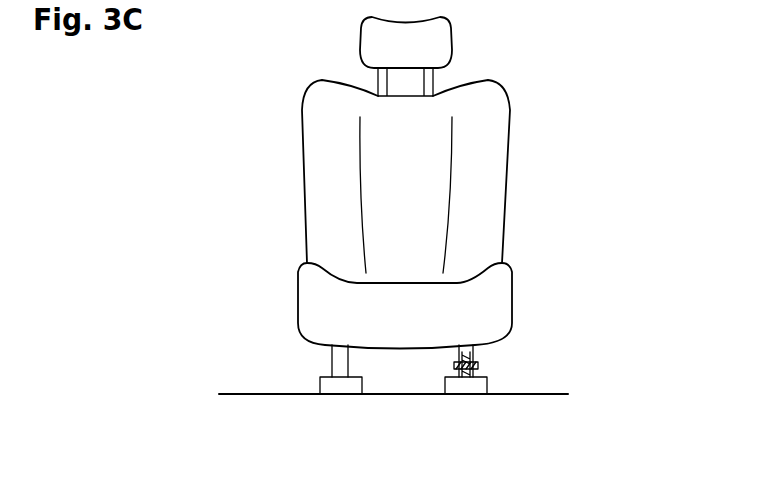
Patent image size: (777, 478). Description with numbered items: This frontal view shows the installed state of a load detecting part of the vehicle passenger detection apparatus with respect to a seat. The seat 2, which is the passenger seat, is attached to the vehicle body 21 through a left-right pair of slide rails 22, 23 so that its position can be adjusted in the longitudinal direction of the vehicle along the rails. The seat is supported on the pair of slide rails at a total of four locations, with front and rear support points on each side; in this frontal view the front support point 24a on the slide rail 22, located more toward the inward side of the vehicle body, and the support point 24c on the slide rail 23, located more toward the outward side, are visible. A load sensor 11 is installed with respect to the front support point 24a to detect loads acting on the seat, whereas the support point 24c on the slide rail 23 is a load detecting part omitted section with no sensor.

The seat 2 is at (512, 292).
The vehicle body 21 is at (240, 392).
The slide rail 22 is at (472, 385).
The slide rail 23 is at (342, 385).
The front support point 24a is at (478, 361).
The support point 24c is at (343, 362).
The load sensor 11 is at (478, 366).